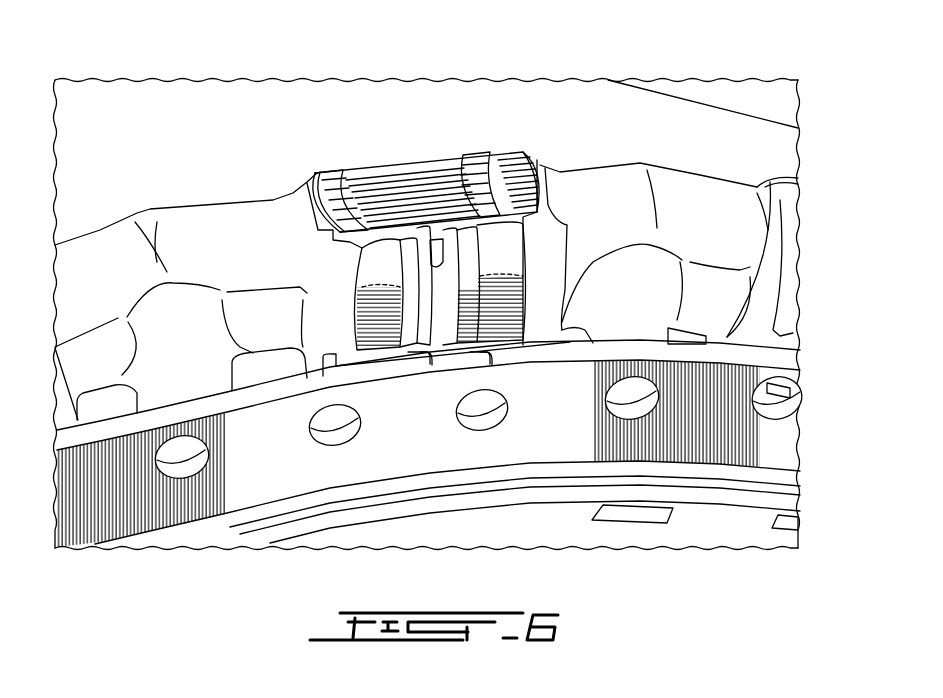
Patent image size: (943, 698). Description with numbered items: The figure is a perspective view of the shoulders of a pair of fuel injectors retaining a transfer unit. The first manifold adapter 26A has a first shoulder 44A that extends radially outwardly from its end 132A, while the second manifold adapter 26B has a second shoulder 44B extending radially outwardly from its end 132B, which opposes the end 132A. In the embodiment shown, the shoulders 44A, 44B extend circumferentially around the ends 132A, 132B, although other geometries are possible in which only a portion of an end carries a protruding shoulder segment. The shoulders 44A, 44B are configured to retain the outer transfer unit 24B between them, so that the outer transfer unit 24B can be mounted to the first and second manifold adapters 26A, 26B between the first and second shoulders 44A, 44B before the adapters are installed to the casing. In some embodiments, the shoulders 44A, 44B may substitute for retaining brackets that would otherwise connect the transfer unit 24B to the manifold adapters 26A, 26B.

The first manifold adapter 26A is at (137, 230).
The second manifold adapter 26B is at (700, 175).
The outer transfer unit 24B is at (418, 163).
The first shoulder 44A is at (310, 175).
The second shoulder 44B is at (540, 160).
The end 132A is at (428, 362).
The end 132B is at (493, 362).